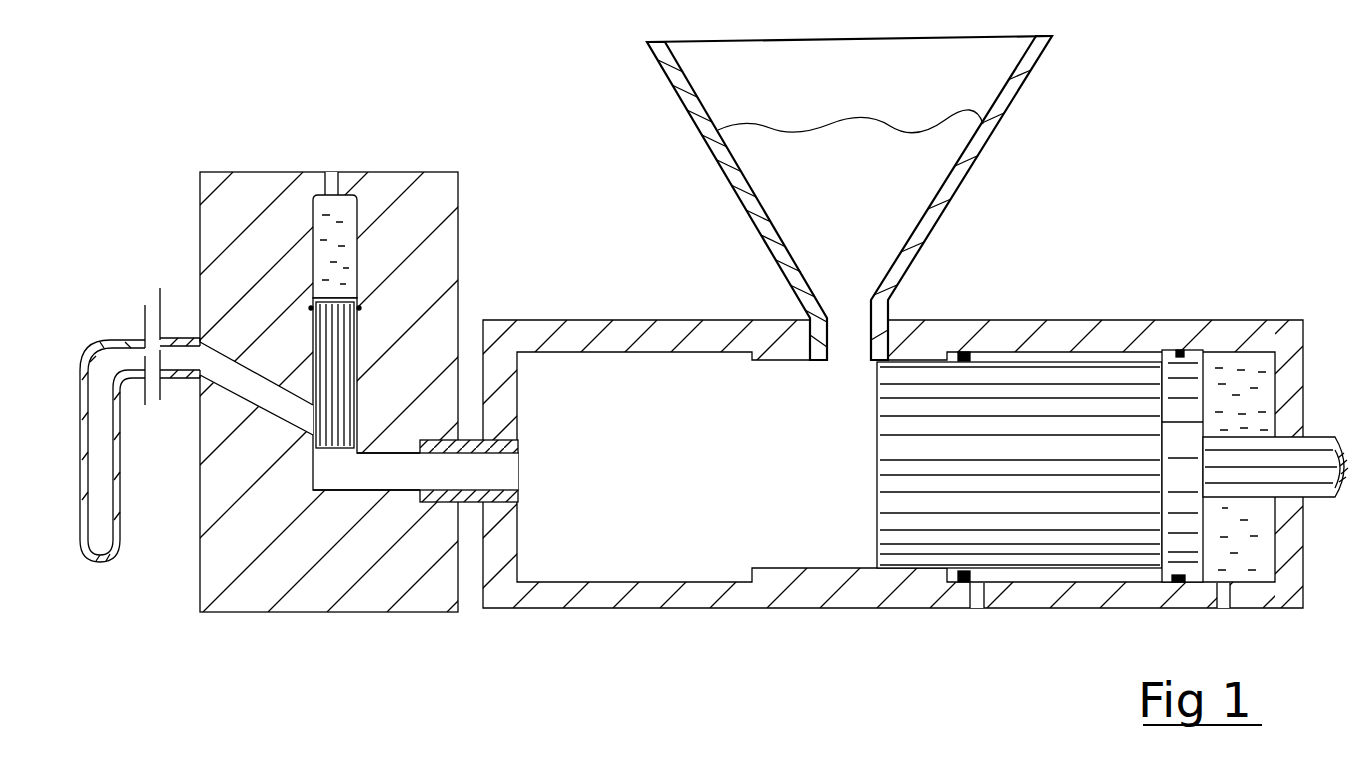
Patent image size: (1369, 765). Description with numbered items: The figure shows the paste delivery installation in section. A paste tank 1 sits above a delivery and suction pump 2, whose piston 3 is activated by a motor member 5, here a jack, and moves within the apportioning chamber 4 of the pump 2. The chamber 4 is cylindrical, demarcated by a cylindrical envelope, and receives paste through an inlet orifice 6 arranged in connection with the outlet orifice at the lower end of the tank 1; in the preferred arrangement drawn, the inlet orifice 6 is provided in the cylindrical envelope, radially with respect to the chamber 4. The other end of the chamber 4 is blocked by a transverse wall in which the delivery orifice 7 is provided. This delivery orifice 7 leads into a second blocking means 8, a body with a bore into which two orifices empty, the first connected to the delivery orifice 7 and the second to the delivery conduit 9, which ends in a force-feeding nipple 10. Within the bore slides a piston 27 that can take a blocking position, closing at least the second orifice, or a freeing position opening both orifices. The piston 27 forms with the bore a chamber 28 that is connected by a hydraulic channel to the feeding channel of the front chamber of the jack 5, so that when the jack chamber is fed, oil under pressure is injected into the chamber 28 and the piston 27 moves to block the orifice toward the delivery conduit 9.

The paste tank 1 is at (1027, 90).
The delivery and suction pump 2 is at (679, 321).
The piston 3 is at (938, 548).
The apportioning chamber 4 is at (658, 575).
The motor member 5 is at (1123, 321).
The inlet orifice 6 is at (883, 335).
The delivery orifice 7 is at (482, 482).
The second blocking means 8 is at (430, 172).
The delivery conduit 9 is at (203, 342).
The force-feeding nipple 10 is at (96, 566).
The piston 27 is at (360, 346).
The chamber 28 is at (336, 222).